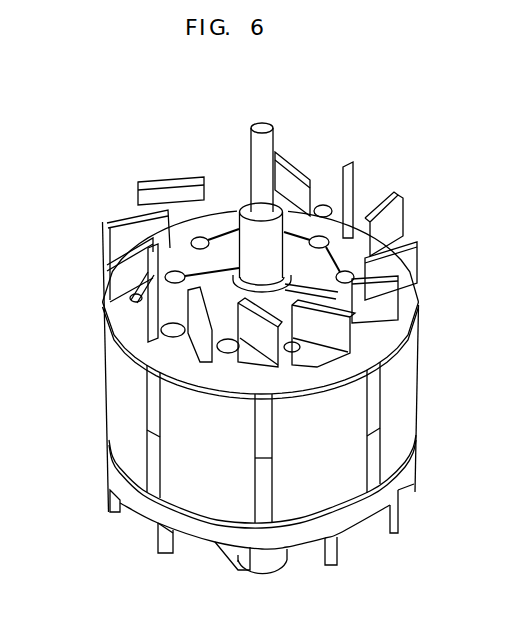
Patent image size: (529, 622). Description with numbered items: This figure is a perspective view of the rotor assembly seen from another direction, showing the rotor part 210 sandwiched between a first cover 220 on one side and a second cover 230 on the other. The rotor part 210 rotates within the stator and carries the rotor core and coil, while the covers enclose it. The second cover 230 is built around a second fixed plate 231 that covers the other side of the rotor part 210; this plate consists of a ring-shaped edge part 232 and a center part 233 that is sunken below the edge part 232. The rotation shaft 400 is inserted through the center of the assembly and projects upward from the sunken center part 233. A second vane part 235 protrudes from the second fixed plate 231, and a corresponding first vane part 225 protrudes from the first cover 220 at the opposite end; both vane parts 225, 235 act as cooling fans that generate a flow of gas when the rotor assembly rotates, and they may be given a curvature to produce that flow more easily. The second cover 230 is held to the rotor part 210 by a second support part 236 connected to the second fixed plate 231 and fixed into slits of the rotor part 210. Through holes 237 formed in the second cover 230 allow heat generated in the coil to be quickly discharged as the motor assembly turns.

The rotor part 210 is at (116, 428).
The first cover 220 is at (406, 513).
The first vane part 225 is at (113, 512).
The second cover 230 is at (387, 158).
The second fixed plate 231 is at (73, 133).
The edge part 232 is at (130, 203).
The center part 233 is at (192, 210).
The second vane part 235 is at (420, 256).
The second support part 236 is at (147, 410).
The through holes 237 is at (322, 200).
The rotation shaft 400 is at (259, 126).